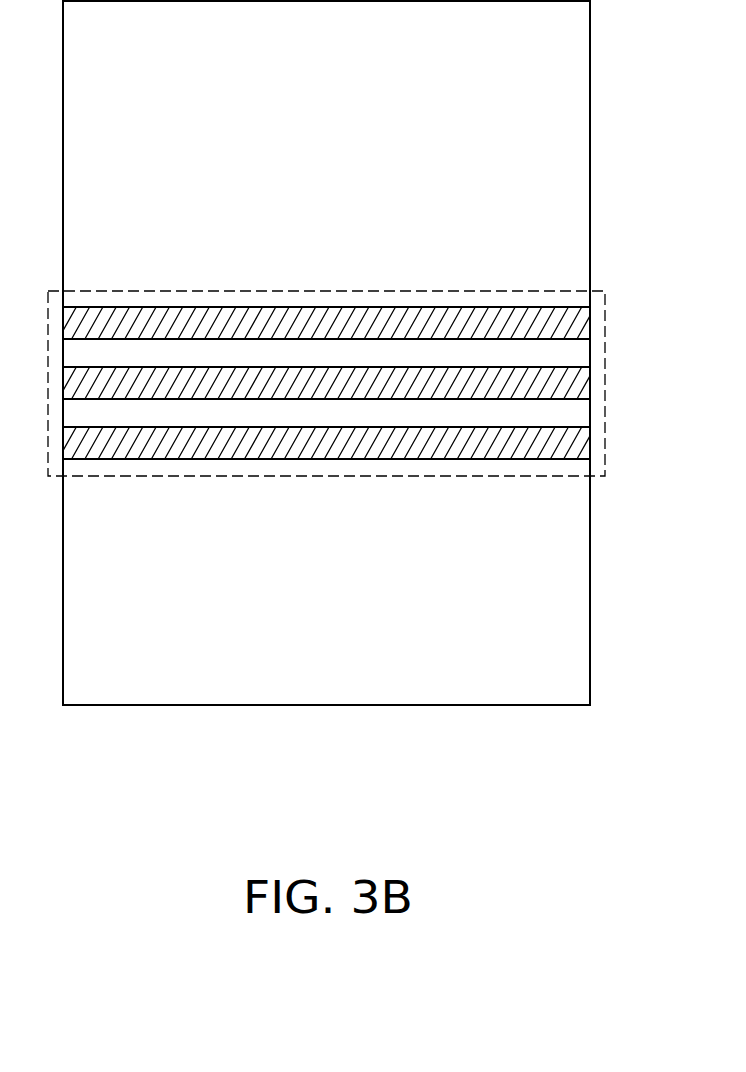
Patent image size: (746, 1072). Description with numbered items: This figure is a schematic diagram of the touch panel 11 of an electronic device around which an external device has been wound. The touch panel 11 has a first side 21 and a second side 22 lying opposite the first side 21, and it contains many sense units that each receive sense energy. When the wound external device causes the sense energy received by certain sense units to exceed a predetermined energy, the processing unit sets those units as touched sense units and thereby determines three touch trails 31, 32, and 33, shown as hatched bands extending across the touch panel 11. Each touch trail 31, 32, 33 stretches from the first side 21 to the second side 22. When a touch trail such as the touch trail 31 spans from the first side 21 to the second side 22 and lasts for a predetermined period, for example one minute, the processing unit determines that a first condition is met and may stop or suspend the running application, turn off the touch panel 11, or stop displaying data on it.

The touch panel 11 is at (426, 652).
The first side 21 is at (63, 110).
The second side 22 is at (590, 111).
The touch trail 31 is at (591, 322).
The touch trail 32 is at (591, 382).
The touch trail 33 is at (591, 442).